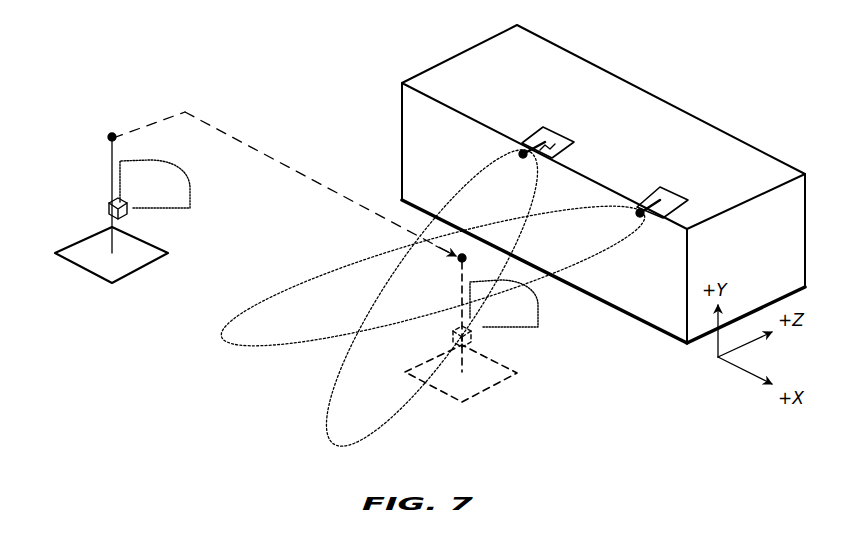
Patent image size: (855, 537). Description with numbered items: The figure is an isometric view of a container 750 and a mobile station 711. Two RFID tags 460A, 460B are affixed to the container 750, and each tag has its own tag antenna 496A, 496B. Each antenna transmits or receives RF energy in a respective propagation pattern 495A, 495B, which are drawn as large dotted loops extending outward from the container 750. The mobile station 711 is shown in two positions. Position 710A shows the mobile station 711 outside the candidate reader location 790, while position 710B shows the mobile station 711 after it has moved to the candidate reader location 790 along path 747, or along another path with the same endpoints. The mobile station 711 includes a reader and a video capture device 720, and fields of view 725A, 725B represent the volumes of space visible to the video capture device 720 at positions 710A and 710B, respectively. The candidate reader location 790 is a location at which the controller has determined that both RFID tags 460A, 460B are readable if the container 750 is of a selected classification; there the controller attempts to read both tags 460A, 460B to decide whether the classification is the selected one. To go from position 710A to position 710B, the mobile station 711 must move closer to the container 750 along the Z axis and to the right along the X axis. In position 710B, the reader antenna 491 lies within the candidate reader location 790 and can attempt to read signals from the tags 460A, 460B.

The reader antenna 491 is at (112, 136).
The path 747 is at (185, 112).
The field of view 725A is at (196, 179).
The field of view 725B is at (540, 318).
The video capture device 720 is at (104, 210).
The mobile station 711 is at (85, 270).
The position 710A is at (287, 268).
The position 710B is at (532, 329).
The candidate reader location 790 is at (337, 347).
The propagation pattern 495A is at (608, 246).
The propagation pattern 495B is at (466, 173).
The tag antenna 496A is at (645, 203).
The tag antenna 496B is at (553, 147).
The RFID tag 460A is at (688, 194).
The RFID tag 460B is at (538, 130).
The container 750 is at (750, 140).